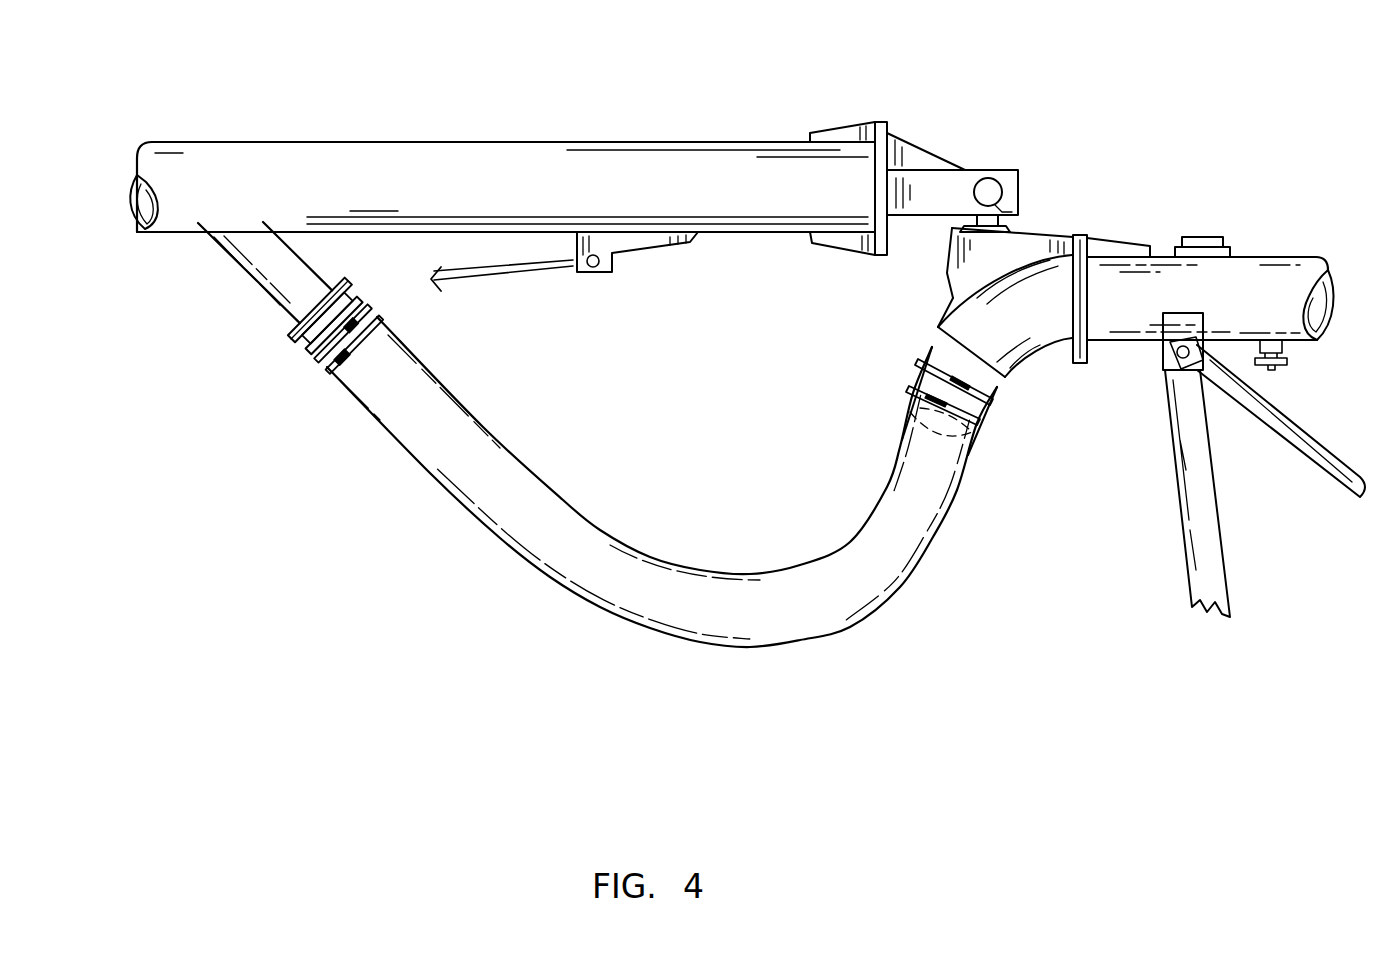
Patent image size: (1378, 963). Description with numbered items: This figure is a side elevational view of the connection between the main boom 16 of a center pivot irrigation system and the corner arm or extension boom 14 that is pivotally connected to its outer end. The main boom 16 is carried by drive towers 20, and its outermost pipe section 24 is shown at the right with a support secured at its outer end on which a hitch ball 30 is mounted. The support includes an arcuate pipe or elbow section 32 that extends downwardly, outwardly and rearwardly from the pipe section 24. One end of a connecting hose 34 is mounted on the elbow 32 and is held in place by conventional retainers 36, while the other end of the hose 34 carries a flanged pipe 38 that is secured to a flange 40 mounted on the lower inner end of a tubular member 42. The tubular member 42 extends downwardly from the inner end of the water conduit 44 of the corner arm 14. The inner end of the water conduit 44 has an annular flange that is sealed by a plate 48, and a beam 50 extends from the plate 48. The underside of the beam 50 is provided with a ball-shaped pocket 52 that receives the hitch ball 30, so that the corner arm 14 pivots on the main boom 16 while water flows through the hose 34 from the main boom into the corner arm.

The corner arm irrigation system or extension boom 14 is at (632, 127).
The main water conduit or boom 16 is at (1243, 222).
The drive towers 20 is at (1218, 547).
The outermost pipe section 24 is at (1262, 282).
The hitch ball 30 is at (957, 212).
The arcuate pipe or elbow section 32 is at (897, 407).
The connecting hose 34 is at (595, 547).
The retainers 36 is at (904, 392).
The flanged pipe 38 is at (353, 288).
The flange 40 is at (290, 332).
The tubular member 42 is at (300, 270).
The water conduit 44 is at (748, 165).
The plate 48 is at (890, 125).
The beam 50 is at (962, 180).
The ball-shaped pocket 52 is at (1020, 197).